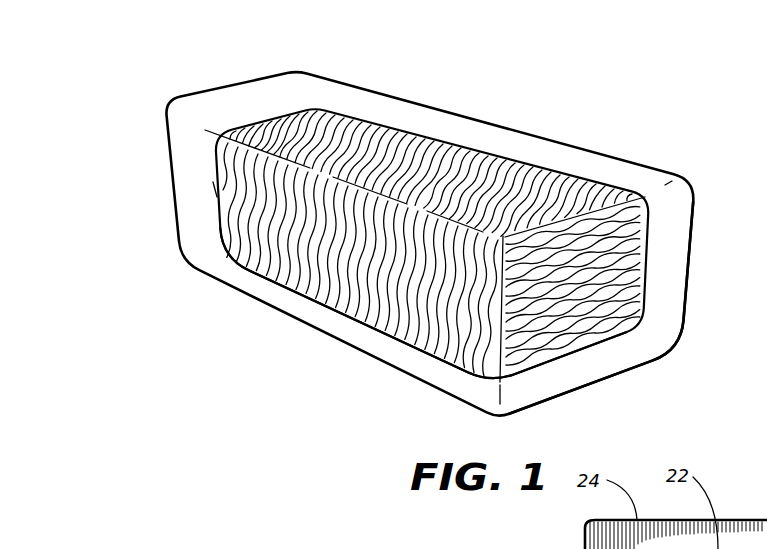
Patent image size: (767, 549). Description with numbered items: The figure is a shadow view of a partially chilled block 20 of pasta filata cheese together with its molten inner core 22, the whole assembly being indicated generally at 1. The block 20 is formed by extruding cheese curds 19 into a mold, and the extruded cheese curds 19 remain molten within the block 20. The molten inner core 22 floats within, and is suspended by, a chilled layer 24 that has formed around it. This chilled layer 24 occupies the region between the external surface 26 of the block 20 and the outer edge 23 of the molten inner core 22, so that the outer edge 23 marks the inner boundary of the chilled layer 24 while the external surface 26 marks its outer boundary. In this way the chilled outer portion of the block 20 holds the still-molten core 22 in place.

The packaged food product 1 is at (463, 76).
The cheese curds 19 is at (567, 293).
The block 20 is at (164, 108).
The molten inner core 22 is at (320, 127).
The outer edge 23 is at (493, 150).
The chilled layer 24 is at (463, 373).
The external surface 26 is at (658, 163).